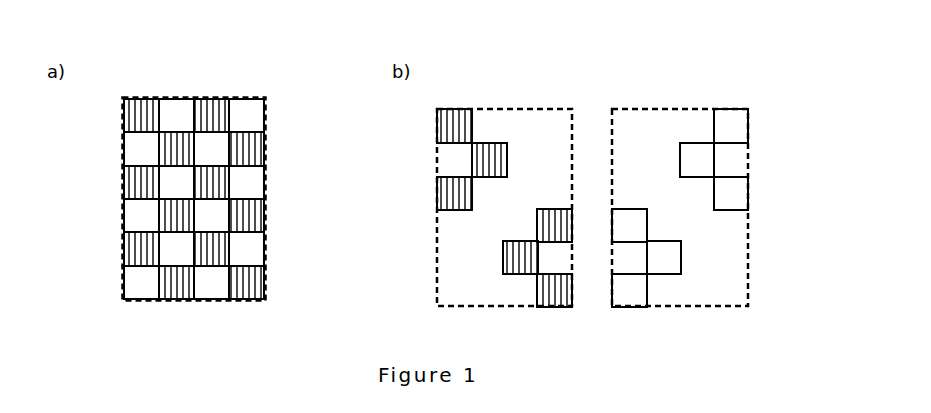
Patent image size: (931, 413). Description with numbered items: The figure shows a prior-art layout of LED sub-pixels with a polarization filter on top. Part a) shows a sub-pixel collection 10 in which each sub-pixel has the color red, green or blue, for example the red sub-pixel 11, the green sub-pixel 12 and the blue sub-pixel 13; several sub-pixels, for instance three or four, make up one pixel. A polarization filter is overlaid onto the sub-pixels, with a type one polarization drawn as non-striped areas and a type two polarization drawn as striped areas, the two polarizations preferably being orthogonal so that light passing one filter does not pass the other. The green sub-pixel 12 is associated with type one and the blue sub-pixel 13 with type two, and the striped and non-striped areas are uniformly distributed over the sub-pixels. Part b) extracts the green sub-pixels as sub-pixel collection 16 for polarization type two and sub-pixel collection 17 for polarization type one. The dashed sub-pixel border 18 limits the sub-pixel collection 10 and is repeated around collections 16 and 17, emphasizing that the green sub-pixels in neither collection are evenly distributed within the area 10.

The sub-pixel collection 10 is at (472, 171).
The red sub-pixel 11 is at (197, 102).
The green sub-pixel 12 is at (257, 122).
The blue sub-pixel 13 is at (257, 155).
The sub-pixel collection for polarization type 2 16 is at (495, 91).
The sub-pixel collection for polarization type 1 17 is at (639, 91).
The dashed sub-pixel border 18 is at (264, 230).